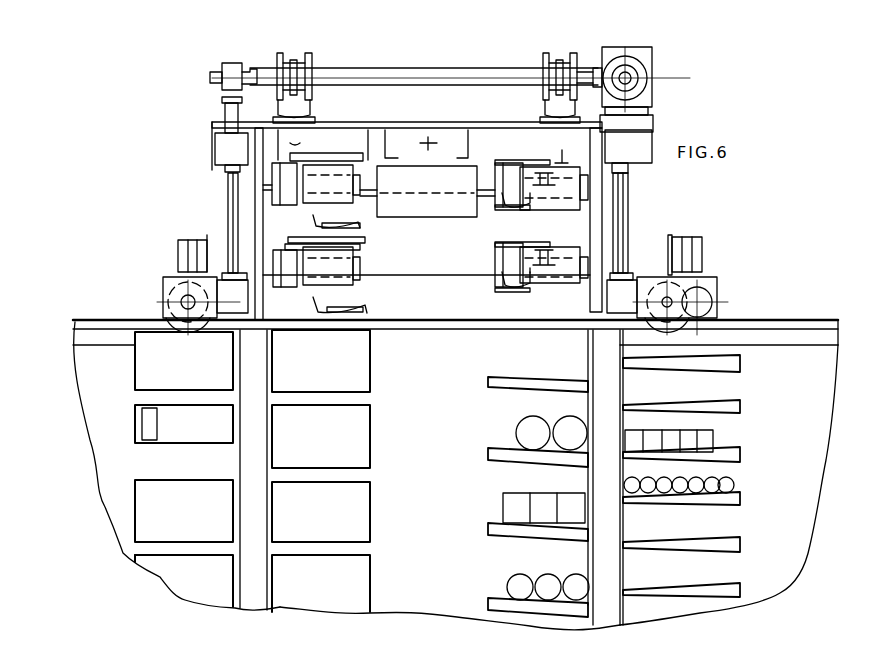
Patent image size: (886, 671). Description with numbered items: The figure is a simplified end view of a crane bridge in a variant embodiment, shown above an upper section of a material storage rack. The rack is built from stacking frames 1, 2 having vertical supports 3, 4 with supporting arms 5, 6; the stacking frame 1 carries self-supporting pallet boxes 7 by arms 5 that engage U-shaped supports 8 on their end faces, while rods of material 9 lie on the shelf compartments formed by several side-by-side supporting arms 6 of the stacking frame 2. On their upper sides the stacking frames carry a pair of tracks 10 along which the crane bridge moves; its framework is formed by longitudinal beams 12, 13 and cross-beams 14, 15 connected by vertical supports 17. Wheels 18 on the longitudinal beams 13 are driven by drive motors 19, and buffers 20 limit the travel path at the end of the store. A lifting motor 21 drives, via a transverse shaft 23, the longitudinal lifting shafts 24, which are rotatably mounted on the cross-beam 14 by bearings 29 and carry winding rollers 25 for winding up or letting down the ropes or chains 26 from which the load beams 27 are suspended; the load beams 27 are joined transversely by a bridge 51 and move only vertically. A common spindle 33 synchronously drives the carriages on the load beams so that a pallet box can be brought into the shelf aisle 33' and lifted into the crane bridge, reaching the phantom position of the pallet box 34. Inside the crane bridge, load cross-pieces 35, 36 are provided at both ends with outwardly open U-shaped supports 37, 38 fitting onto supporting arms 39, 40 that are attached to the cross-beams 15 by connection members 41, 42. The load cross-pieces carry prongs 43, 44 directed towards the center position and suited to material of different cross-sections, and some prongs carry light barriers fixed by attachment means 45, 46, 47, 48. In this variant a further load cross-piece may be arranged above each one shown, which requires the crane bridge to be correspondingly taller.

The stacking frame 1 is at (120, 515).
The stacking frame 2 is at (788, 476).
The vertical support 3 is at (253, 590).
The vertical support 4 is at (610, 583).
The supporting arm 5 is at (170, 420).
The supporting arm 6 is at (733, 407).
The pallet box 7 is at (158, 525).
The U-shaped support 8 is at (150, 428).
The rods of material 9 is at (723, 482).
The track 10 is at (808, 330).
The longitudinal beam 12 is at (217, 123).
The longitudinal beam 13 is at (172, 275).
The cross-beam 14 is at (227, 145).
The cross-beam 15 is at (235, 292).
The vertical support 17 is at (232, 240).
The wheel 18 is at (177, 308).
The drive motor 19 is at (700, 300).
The buffer 20 is at (690, 242).
The lifting motor 21 is at (635, 50).
The shaft 23 is at (257, 128).
The lifting shaft 24 is at (385, 67).
The winding roller 25 is at (560, 55).
The rope or chain 26 is at (313, 53).
The load beam 27 is at (480, 150).
The bearing 29 is at (220, 75).
The spindle 33 is at (431, 96).
The shelf aisle 33' is at (450, 614).
The pallet box in lifted position 34 is at (445, 168).
The load cross-piece 35 is at (288, 292).
The load cross-piece 36 is at (544, 268).
The support 37 is at (350, 312).
The support 38 is at (543, 267).
The supporting arm 39 is at (372, 158).
The supporting arm 40 is at (503, 288).
The connection member 41 is at (247, 67).
The connection member 42 is at (587, 127).
The prong 43 is at (303, 305).
The prong 44 is at (520, 165).
The attachment means 45 is at (354, 292).
The attachment means 46 is at (330, 153).
The attachment means 47 is at (530, 273).
The attachment means 48 is at (500, 163).
The bridge 51 is at (395, 132).